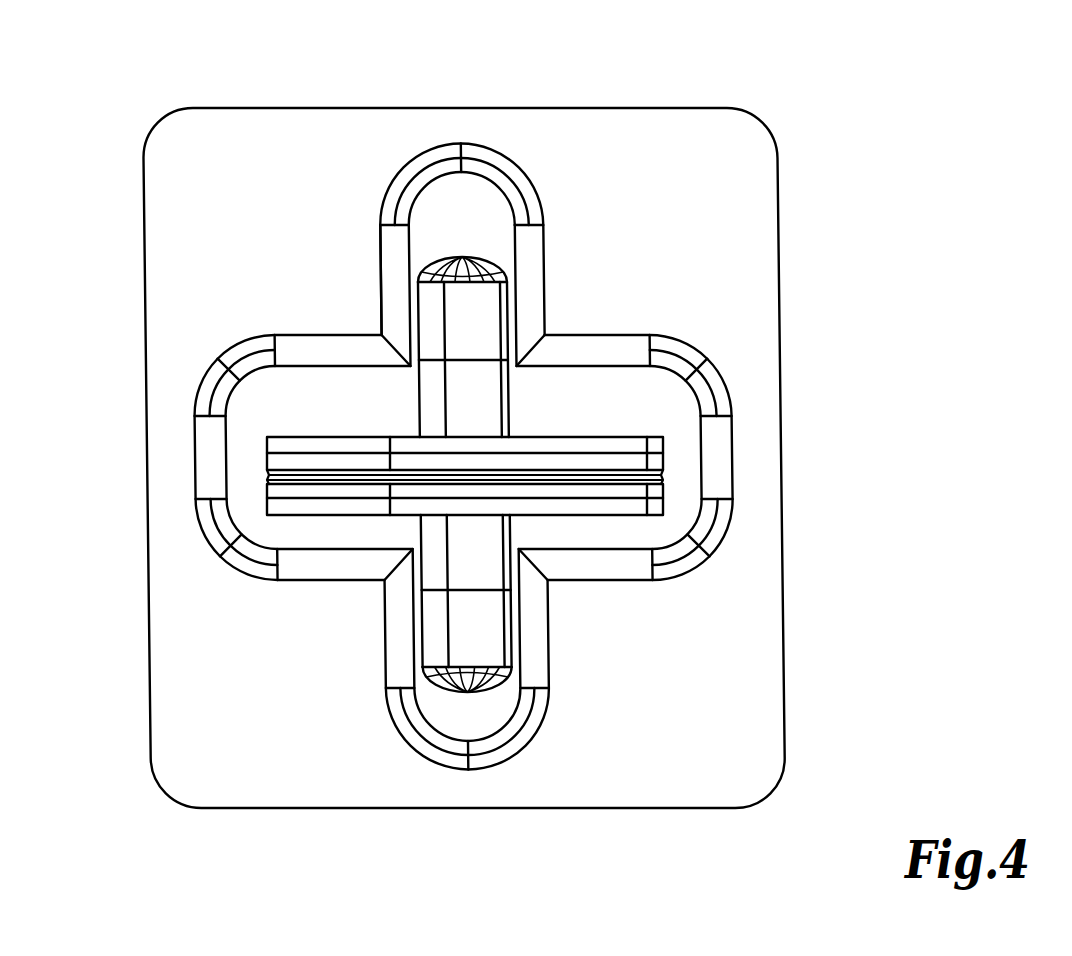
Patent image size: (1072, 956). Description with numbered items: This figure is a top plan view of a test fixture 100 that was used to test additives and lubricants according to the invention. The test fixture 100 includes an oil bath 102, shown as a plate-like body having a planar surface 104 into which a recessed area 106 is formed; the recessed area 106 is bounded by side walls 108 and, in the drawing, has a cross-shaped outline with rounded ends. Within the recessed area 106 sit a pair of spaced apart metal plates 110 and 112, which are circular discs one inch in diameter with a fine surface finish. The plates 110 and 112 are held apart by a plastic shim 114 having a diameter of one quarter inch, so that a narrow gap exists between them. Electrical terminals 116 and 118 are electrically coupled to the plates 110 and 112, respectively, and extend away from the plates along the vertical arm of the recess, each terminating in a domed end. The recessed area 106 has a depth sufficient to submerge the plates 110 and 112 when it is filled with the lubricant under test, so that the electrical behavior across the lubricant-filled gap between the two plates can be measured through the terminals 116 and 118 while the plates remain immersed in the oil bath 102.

The test fixture 100 is at (551, 413).
The oil bath 102 is at (780, 198).
The planar surface 104 is at (464, 446).
The recessed area 106 is at (452, 200).
The side walls 108 is at (397, 247).
The metal plate 110 is at (676, 454).
The metal plate 112 is at (680, 500).
The plastic shim 114 is at (466, 477).
The electrical terminal 116 is at (473, 315).
The electrical terminal 118 is at (480, 633).